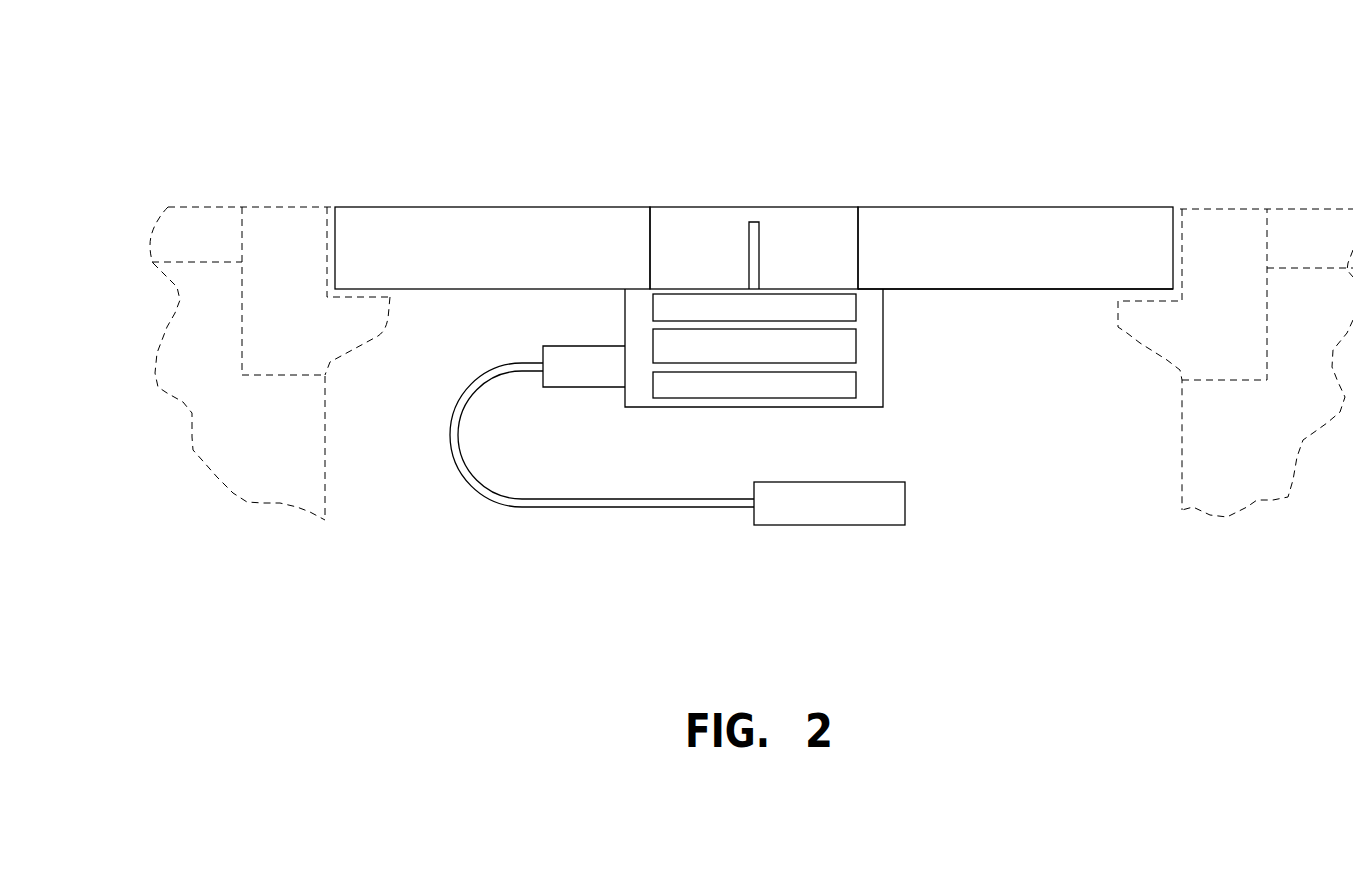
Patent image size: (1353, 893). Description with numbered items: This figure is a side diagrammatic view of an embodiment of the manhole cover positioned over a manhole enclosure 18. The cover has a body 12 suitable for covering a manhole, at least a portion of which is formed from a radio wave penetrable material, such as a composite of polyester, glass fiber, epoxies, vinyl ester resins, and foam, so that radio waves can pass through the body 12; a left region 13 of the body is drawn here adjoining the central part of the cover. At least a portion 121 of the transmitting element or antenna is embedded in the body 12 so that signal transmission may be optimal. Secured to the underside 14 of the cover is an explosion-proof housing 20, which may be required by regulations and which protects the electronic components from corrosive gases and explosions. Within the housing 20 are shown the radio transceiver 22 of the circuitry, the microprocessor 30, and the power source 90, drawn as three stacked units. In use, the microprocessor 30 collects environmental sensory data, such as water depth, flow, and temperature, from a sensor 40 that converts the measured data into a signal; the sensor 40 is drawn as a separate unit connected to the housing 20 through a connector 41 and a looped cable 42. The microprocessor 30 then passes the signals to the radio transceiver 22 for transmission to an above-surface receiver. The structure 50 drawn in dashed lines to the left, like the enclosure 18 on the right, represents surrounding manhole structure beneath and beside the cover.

The body 12 is at (1082, 208).
The first frame portion 13 is at (575, 207).
The portion of the transmitting element 121 is at (760, 238).
The underside 14 is at (1055, 290).
The enclosure 18 is at (1080, 556).
The explosion-proof housing 20 is at (883, 391).
The radio transceiver 22 is at (652, 306).
The microprocessor 30 is at (856, 341).
The power source 90 is at (687, 399).
The sensor 40 is at (837, 526).
The plug 41 is at (584, 388).
The cable 42 is at (518, 508).
The support member 50 is at (213, 207).